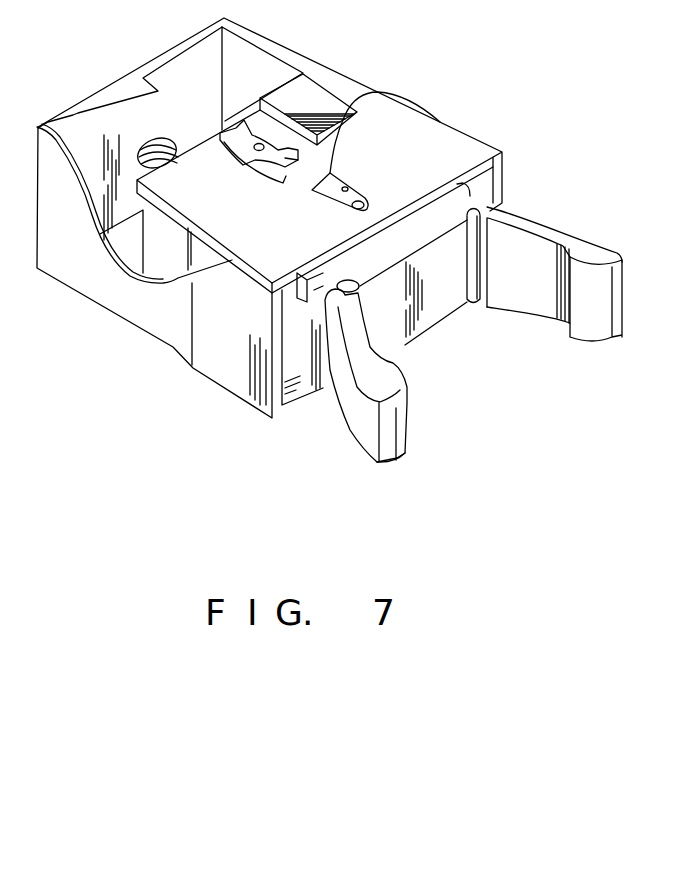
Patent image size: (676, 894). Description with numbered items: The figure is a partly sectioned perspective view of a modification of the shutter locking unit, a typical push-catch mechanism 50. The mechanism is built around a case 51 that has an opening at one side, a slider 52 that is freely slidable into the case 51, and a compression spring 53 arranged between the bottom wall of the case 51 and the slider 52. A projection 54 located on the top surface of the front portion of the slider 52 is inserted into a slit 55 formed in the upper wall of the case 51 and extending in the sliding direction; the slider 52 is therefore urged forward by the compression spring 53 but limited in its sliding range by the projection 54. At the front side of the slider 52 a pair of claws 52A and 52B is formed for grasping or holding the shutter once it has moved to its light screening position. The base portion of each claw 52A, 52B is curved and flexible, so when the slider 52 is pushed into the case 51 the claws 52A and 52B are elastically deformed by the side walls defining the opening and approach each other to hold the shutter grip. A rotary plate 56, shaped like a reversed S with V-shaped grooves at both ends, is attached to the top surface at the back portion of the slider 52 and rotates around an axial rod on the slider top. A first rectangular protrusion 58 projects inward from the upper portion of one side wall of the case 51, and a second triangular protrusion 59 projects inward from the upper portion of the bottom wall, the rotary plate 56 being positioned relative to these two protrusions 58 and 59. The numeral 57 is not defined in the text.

The push-catch mechanism 50 is at (158, 365).
The case 51 is at (248, 402).
The slider 52 is at (433, 318).
The claw 52A is at (397, 450).
The claw 52B is at (598, 330).
The compression spring 53 is at (164, 140).
The projection 54 is at (366, 200).
The slit 55 is at (350, 184).
The rotary plate 56 is at (260, 160).
The mounting plate 57 is at (296, 167).
The first rectangular protrusion 58 is at (318, 107).
The second triangular protrusion 59 is at (127, 83).